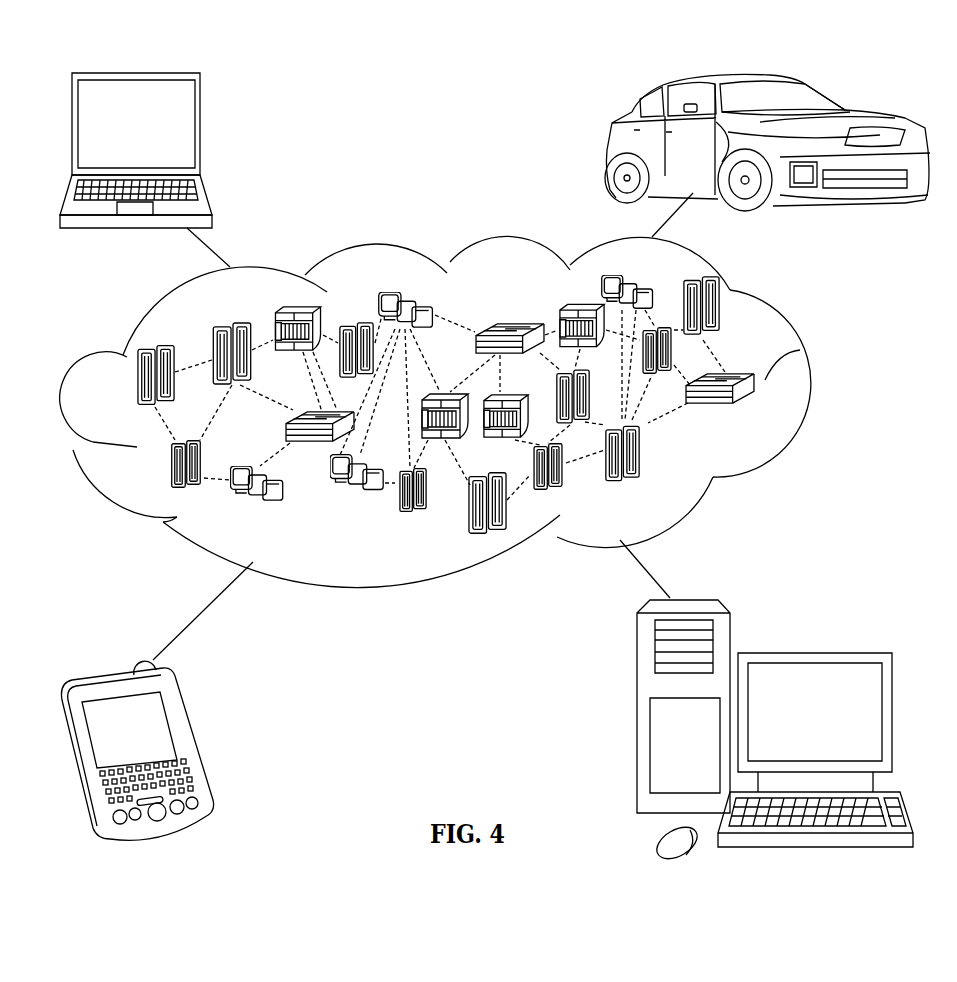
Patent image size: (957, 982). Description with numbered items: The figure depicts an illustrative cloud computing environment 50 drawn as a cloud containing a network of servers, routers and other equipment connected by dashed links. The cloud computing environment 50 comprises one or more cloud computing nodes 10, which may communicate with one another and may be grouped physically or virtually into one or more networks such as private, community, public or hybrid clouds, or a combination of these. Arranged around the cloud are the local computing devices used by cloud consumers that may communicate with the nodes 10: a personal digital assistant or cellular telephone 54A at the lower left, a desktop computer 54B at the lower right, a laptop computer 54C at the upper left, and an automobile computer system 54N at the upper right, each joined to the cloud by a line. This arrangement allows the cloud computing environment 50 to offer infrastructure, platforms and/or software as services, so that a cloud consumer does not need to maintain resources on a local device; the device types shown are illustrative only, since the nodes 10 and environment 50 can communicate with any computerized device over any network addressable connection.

The cloud computing node 10 is at (762, 414).
The cloud computing environment 50 is at (463, 411).
The personal digital assistant (PDA) or cellular telephone 54A is at (192, 738).
The desktop computer 54B is at (812, 652).
The laptop computer 54C is at (200, 133).
The automobile computer system 54N is at (607, 150).